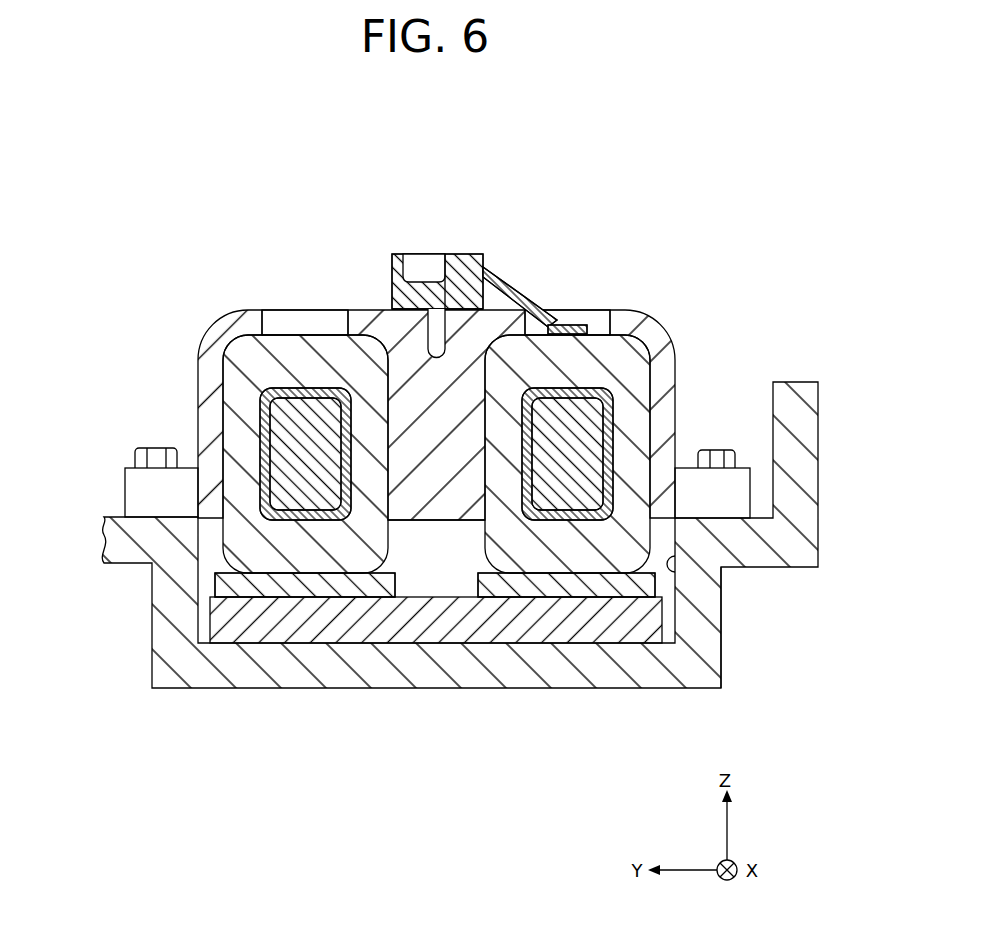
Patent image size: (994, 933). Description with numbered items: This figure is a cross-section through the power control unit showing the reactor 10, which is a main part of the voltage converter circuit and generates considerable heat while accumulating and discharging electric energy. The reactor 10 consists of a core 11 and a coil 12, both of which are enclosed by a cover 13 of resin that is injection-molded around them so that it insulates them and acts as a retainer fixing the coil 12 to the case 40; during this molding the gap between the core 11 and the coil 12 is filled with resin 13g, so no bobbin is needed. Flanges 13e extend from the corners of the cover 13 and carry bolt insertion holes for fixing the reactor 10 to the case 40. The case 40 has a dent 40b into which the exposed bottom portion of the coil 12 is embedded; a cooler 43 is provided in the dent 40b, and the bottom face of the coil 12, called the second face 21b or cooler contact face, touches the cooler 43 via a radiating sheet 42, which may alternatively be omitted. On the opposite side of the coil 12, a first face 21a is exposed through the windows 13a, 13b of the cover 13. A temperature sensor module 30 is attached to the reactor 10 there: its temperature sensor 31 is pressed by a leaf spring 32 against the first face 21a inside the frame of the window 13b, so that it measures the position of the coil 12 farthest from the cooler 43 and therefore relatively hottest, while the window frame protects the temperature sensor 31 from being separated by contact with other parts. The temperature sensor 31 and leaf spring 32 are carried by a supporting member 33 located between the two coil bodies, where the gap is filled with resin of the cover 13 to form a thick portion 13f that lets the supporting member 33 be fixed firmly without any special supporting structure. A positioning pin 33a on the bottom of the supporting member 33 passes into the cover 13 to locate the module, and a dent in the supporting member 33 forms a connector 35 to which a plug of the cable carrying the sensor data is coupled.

The reactor 10 is at (214, 316).
The core 11 is at (280, 433).
The coil 12 is at (237, 380).
The cover 13 is at (632, 328).
The window 13a is at (270, 318).
The window 13b is at (603, 311).
The flange 13e is at (133, 492).
The thick portion 13f is at (432, 524).
The resin 13g is at (265, 413).
The first face 21a is at (308, 330).
The second face 21b is at (281, 578).
The temperature sensor module 30 is at (410, 248).
The temperature sensor 31 is at (563, 323).
The leaf spring 32 is at (526, 308).
The supporting member 33 is at (467, 263).
The positioning pin 33a is at (415, 322).
The connector 35 is at (433, 265).
The case 40 is at (796, 390).
The dent 40b is at (722, 633).
The radiating sheet 42 is at (229, 590).
The cooler 43 is at (310, 627).